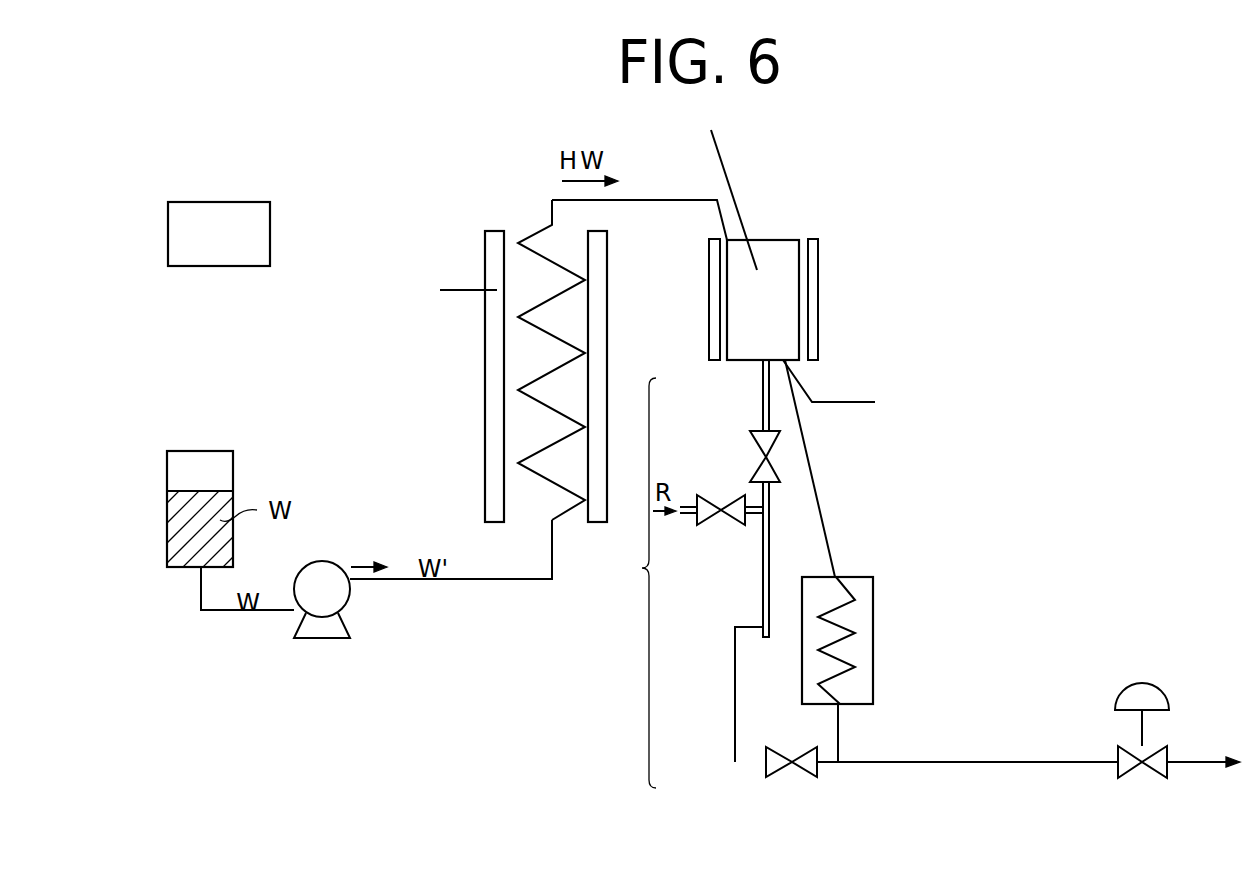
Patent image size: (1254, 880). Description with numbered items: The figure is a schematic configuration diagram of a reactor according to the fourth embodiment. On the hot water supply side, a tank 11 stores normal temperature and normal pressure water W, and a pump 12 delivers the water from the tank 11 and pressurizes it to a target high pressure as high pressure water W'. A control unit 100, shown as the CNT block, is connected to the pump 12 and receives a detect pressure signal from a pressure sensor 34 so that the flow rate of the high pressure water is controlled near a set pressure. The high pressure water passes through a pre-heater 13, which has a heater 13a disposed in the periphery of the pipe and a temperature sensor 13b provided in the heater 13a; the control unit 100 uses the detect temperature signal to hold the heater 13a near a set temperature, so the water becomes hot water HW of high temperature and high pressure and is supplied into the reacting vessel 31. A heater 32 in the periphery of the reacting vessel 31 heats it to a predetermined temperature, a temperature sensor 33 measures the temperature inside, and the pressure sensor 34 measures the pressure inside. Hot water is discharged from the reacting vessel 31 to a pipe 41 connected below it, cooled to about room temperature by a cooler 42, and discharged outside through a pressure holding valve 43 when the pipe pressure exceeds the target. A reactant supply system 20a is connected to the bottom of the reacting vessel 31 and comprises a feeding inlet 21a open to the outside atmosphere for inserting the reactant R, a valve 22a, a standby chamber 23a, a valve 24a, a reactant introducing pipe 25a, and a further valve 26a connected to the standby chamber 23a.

The control unit 100 is at (220, 202).
The tank 11 is at (233, 466).
The pump 12 is at (322, 561).
The pre-heater 13 is at (537, 361).
The heater 13a is at (485, 403).
The temperature sensor 13b is at (453, 293).
The reacting vessel 31 is at (777, 240).
The heater 32 is at (818, 270).
The temperature sensor 33 is at (718, 153).
The pressure sensor 34 is at (863, 400).
The pipe 41 is at (823, 508).
The cooler 42 is at (873, 612).
The pressure holding valve 43 is at (1153, 778).
The reactant supply system 20a is at (622, 583).
The feeding inlet 21a is at (685, 518).
The valve 22a is at (735, 525).
The standby chamber 23a is at (763, 595).
The valve 24a is at (750, 448).
The reactant introducing pipe 25a is at (763, 398).
The valve 26a is at (803, 778).